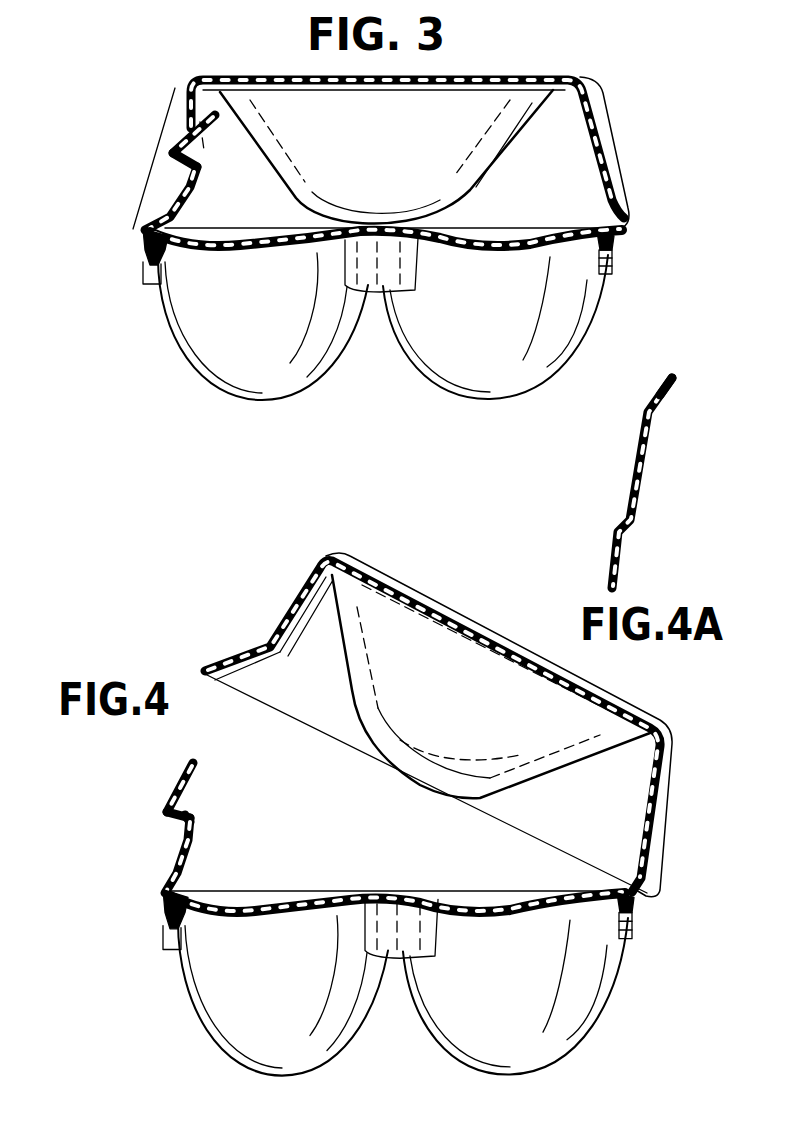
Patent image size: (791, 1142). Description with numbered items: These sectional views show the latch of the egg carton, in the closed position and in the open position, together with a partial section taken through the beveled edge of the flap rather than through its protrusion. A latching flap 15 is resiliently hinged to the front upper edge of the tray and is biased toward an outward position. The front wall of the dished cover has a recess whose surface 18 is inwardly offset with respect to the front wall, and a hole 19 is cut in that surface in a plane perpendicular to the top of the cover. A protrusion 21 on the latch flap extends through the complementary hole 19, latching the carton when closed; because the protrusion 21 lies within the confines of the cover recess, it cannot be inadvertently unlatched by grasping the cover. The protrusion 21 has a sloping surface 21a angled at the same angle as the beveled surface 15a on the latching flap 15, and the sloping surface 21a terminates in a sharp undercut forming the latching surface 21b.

In FIG. 3, the latching flap 15 is at (190, 200).
In FIG. 4A, the latching flap 15 is at (647, 467).
In FIG. 4, the latching flap 15 is at (193, 843).
In FIG. 4A, the beveled surface 15a is at (658, 392).
In FIG. 3, the surface 18 is at (182, 117).
In FIG. 4, the surface 18 is at (305, 587).
In FIG. 4, the hole 19 is at (282, 622).
In FIG. 3, the protrusion 21 is at (170, 155).
In FIG. 4, the protrusion 21 is at (165, 812).
In FIG. 3, the sloping surface 21a is at (177, 143).
In FIG. 4, the sloping surface 21a is at (178, 787).
In FIG. 4, the latching surface 21b is at (168, 828).